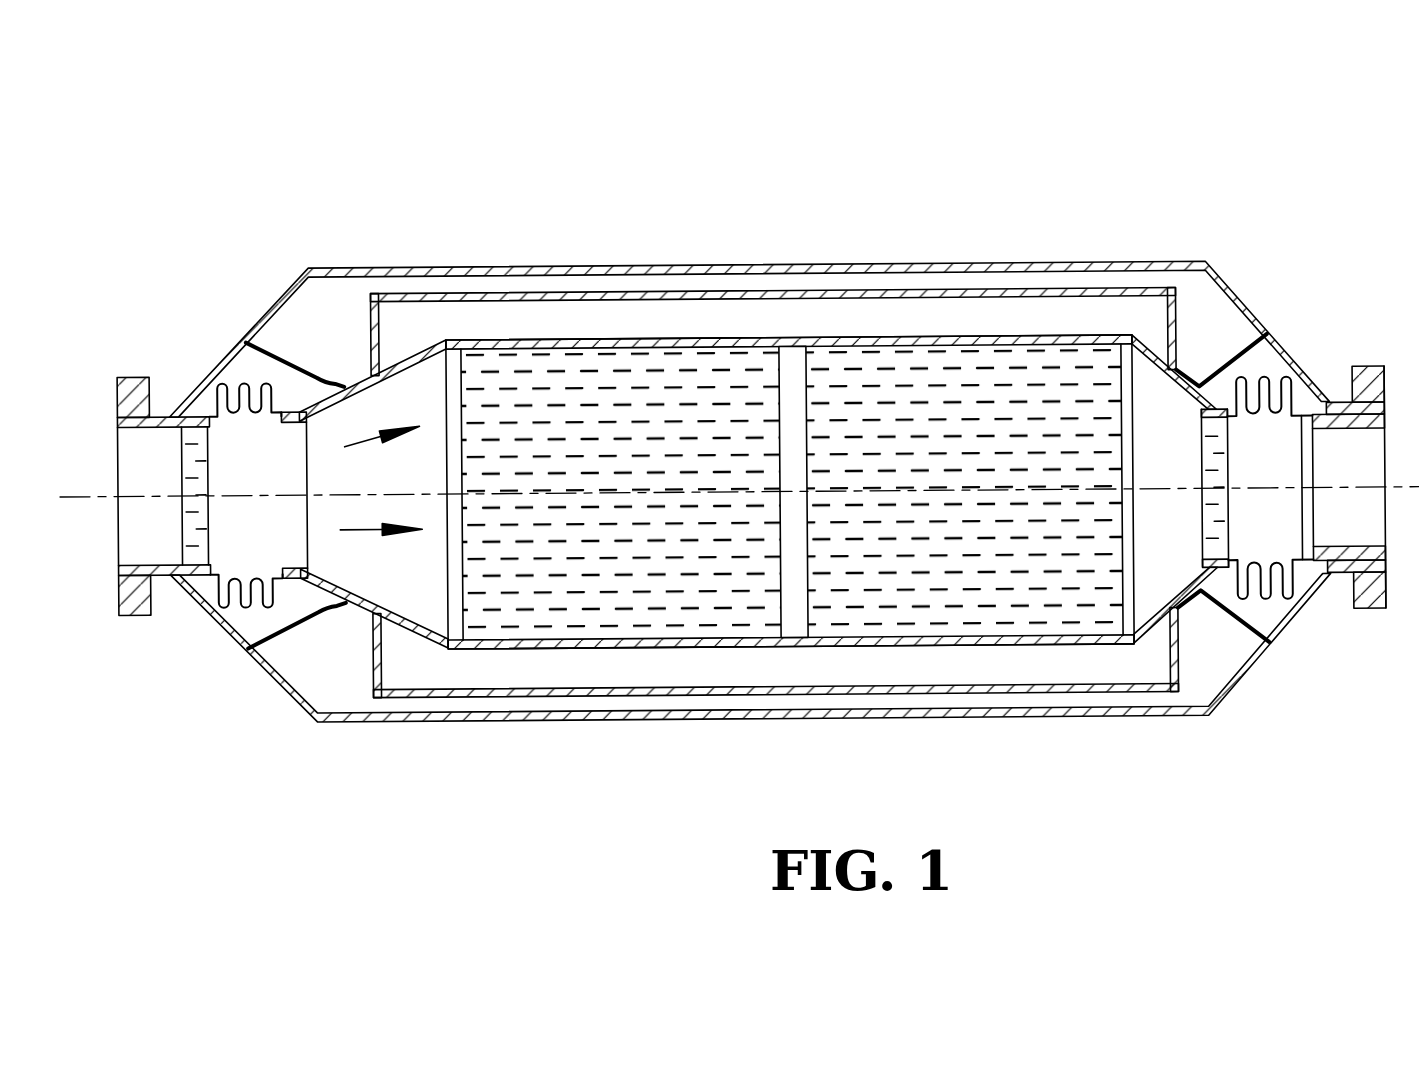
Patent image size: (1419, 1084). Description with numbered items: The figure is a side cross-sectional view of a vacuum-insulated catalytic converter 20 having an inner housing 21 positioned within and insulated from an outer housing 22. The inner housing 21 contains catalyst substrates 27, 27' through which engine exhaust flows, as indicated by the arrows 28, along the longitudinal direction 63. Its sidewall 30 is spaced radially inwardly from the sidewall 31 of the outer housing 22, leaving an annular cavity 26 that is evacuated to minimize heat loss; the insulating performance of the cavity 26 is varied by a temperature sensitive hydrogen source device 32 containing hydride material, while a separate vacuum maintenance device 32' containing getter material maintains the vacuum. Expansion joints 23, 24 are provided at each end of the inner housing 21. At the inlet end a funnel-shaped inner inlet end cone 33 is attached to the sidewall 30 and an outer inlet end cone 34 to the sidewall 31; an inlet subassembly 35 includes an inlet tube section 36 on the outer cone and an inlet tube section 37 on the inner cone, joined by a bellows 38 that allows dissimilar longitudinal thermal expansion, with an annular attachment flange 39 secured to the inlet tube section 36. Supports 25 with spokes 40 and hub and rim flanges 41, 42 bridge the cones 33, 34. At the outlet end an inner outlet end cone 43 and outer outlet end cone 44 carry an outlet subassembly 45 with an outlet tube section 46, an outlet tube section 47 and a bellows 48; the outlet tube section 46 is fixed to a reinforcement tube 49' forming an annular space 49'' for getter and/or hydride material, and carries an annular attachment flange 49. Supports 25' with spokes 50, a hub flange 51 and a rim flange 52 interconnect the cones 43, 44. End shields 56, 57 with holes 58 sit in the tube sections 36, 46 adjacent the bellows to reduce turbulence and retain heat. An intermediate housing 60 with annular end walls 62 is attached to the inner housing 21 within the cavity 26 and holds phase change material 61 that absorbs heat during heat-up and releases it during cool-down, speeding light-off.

The catalytic converter 20 is at (961, 233).
The inner housing 21 is at (657, 676).
The outer housing 22 is at (568, 742).
The expansion joint 23 is at (223, 635).
The expansion joint 24 is at (1274, 629).
The support 25 is at (239, 300).
The support 25' is at (1267, 293).
The cavity 26 is at (330, 658).
The catalyst substrate 27 is at (621, 403).
The catalyst substrate 27' is at (964, 408).
The arrows 28 is at (347, 441).
The sidewall of the inner housing 30 is at (750, 650).
The sidewall of the outer housing 31 is at (977, 722).
The temperature sensitive hydrogen source device 32 is at (1358, 325).
The vacuum maintenance device 32' is at (1353, 509).
The inner inlet end cone 33 is at (418, 640).
The outer inlet end cone 34 is at (267, 673).
The inlet subassembly 35 is at (111, 644).
The inlet tube section 36 is at (132, 562).
The inlet tube section 37 is at (295, 557).
The bellows 38 is at (248, 572).
The annular attachment flange 39 is at (140, 373).
The spokes 40 is at (330, 378).
The hub flange 41 is at (340, 386).
The rim flange 42 is at (283, 296).
The inner outlet end cone 43 is at (1152, 621).
The outer outlet end cone 44 is at (1227, 707).
The outlet subassembly 45 is at (1371, 638).
The outlet tube section 46 is at (1348, 434).
The outlet tube section 47 is at (1213, 431).
The bellows 48 is at (1265, 412).
The annular attachment flange 49 is at (1385, 347).
The reinforcement tube 49' is at (1336, 317).
The annular space 49'' is at (1367, 672).
The spokes 50 is at (1200, 388).
The hub flange 51 is at (1197, 371).
The rim flange 52 is at (1220, 365).
The end shield 56 is at (178, 453).
The end shield 57 is at (1228, 516).
The holes 58 is at (200, 459).
The intermediate housing 60 is at (727, 250).
The phase change material 61 is at (607, 316).
The annular end walls 62 is at (396, 368).
The longitudinal direction 63 is at (355, 489).